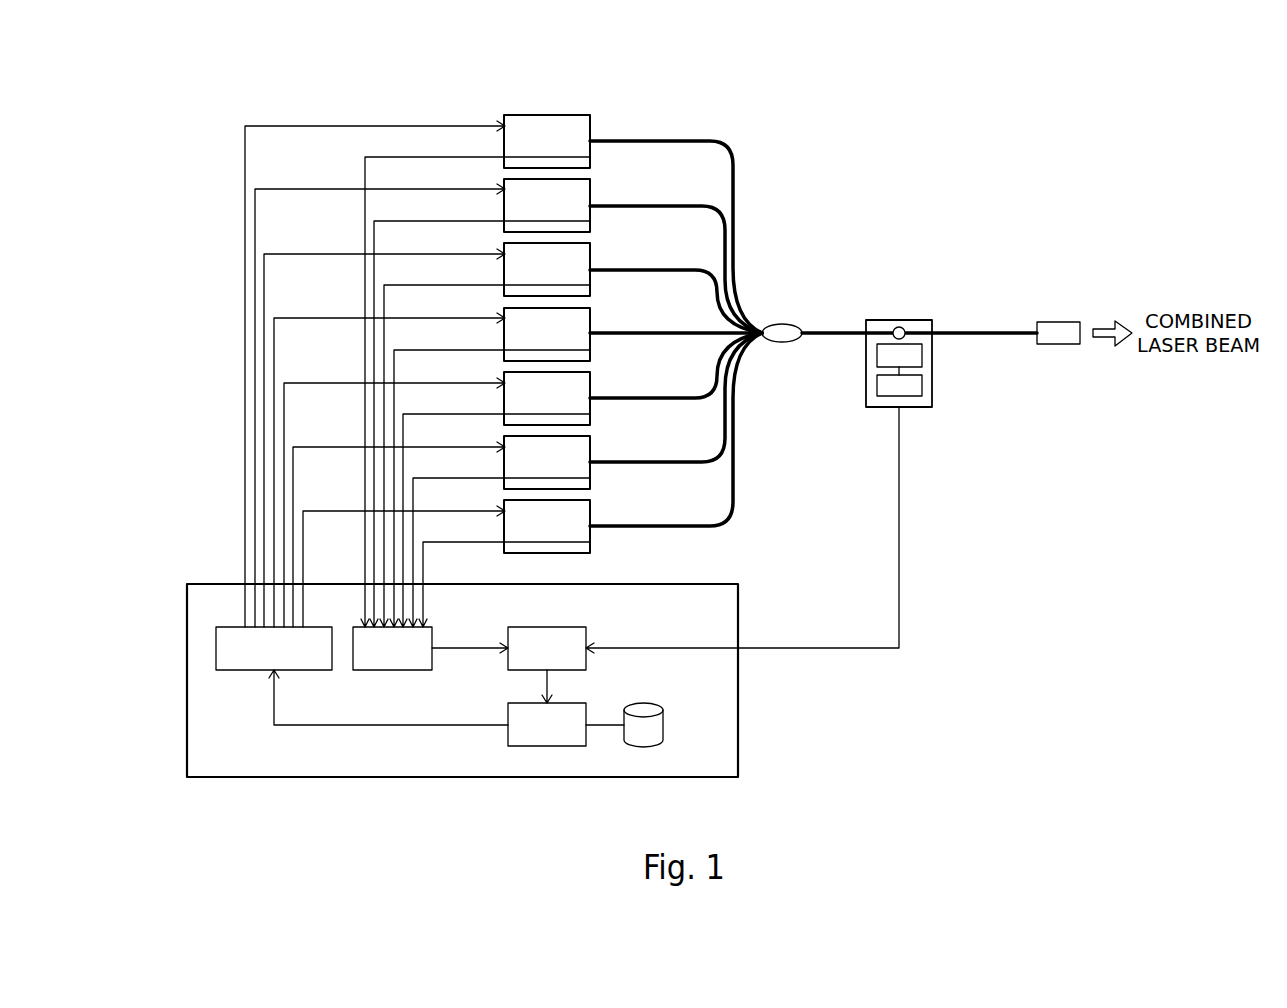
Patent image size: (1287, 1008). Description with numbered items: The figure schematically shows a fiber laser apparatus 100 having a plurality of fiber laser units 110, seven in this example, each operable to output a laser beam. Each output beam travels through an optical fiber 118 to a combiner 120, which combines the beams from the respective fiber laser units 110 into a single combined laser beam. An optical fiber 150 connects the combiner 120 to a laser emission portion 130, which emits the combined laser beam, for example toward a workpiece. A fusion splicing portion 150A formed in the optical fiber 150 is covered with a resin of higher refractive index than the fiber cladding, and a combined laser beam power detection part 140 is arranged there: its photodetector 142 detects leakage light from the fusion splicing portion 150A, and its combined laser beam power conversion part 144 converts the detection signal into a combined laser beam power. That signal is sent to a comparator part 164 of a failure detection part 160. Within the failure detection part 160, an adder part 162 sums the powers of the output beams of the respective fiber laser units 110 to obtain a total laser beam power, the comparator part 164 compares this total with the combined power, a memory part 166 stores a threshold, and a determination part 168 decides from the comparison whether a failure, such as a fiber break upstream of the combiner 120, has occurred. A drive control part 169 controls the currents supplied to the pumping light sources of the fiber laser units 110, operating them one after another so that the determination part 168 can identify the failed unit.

The fiber laser apparatus 100 is at (1048, 107).
The fiber laser unit 110 is at (556, 114).
The optical fiber 118 is at (670, 137).
The combiner 120 is at (783, 322).
The laser emission portion 130 is at (1057, 320).
The combined laser beam power detection part 140 is at (875, 320).
The photodetector 142 is at (922, 355).
The combined laser beam power conversion part 144 is at (922, 387).
The optical fiber 150 is at (835, 338).
The fusion splicing portion 150A is at (901, 326).
The failure detection part 160 is at (738, 735).
The adder part 162 is at (385, 670).
The comparator part 164 is at (586, 663).
The memory part 166 is at (646, 747).
The determination part 168 is at (541, 746).
The drive control part 169 is at (216, 640).